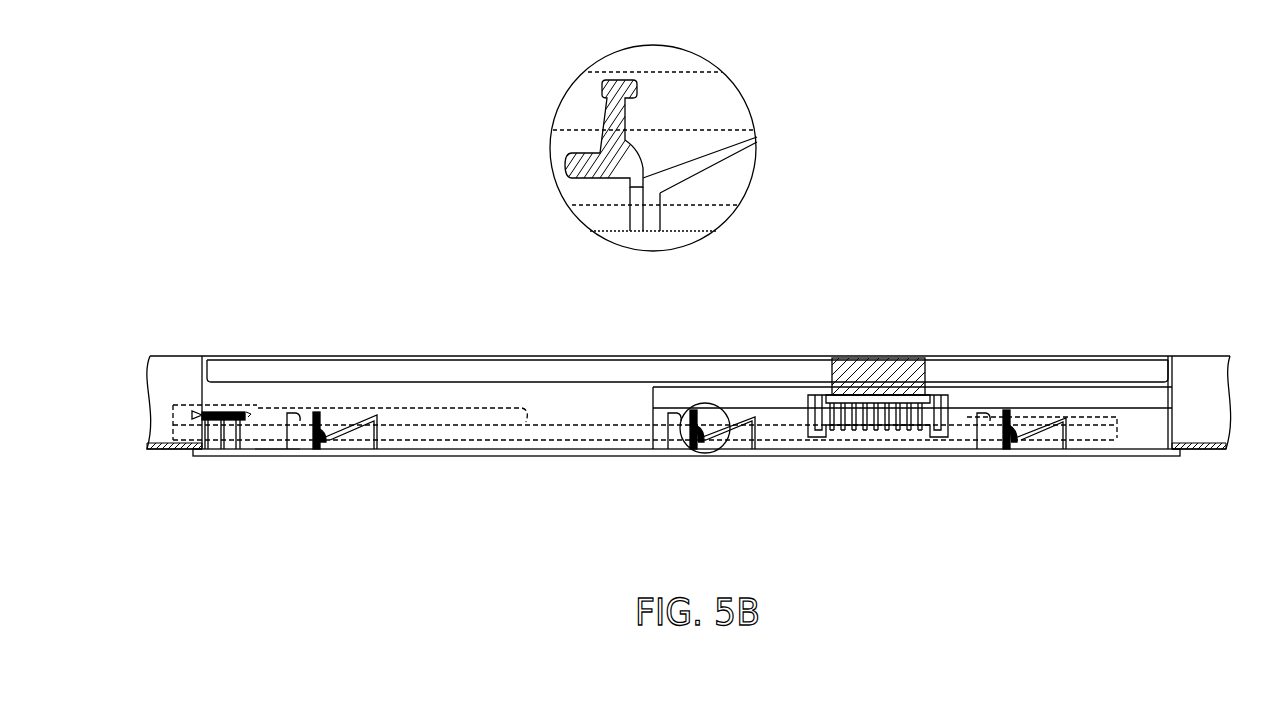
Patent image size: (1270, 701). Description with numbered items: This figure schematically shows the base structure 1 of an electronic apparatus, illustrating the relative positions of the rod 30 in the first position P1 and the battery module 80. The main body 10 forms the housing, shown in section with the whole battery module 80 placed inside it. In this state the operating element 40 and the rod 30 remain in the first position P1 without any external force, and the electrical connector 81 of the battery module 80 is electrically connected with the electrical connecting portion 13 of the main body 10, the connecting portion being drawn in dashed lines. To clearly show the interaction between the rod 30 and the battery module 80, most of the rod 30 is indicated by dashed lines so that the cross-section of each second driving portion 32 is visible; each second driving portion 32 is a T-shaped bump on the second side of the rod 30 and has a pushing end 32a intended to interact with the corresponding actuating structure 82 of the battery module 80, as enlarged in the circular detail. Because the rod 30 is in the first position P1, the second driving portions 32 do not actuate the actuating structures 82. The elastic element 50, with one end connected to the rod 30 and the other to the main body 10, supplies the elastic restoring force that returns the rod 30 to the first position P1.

The base structure 1 is at (1149, 277).
The main body 10 is at (1196, 356).
The electrical connecting portion 13 is at (870, 385).
The rod 30 is at (490, 437).
The second driving portion 32 is at (697, 450).
The pushing end 32a is at (702, 450).
The operating element 40 is at (265, 452).
The elastic element 50 is at (233, 412).
The battery module 80 is at (594, 456).
The electrical connector 81 is at (884, 437).
The actuating structure 82 is at (755, 450).
The first position P1 is at (233, 457).